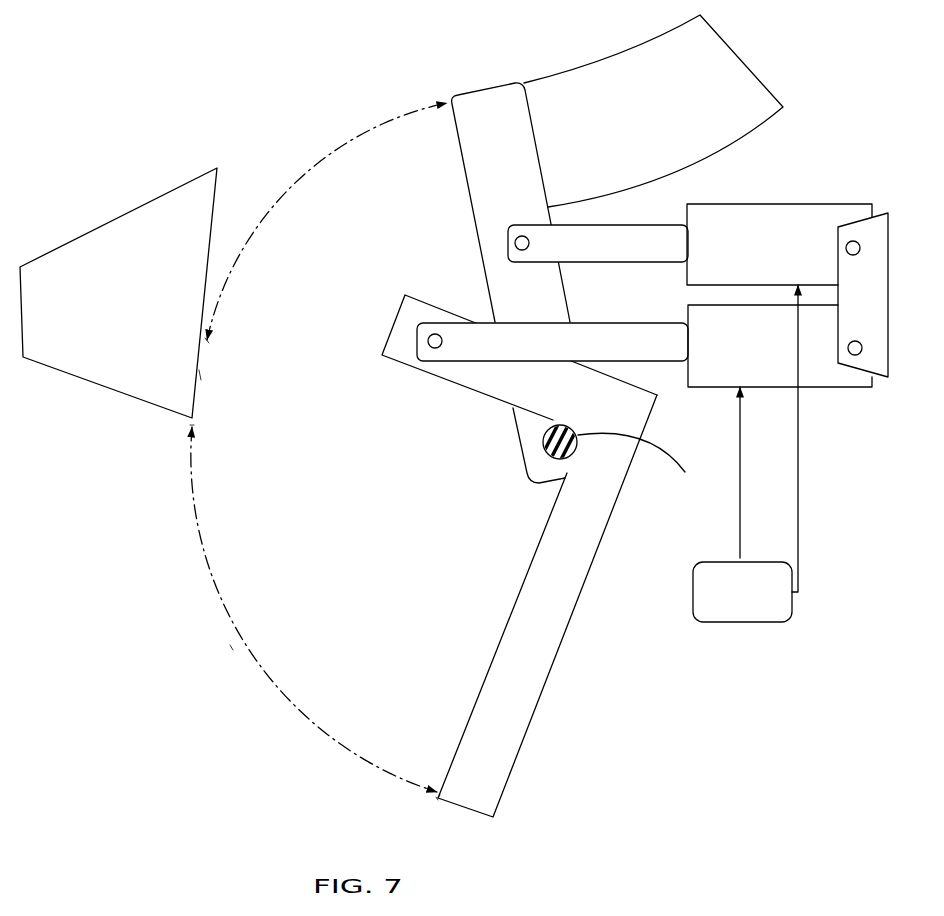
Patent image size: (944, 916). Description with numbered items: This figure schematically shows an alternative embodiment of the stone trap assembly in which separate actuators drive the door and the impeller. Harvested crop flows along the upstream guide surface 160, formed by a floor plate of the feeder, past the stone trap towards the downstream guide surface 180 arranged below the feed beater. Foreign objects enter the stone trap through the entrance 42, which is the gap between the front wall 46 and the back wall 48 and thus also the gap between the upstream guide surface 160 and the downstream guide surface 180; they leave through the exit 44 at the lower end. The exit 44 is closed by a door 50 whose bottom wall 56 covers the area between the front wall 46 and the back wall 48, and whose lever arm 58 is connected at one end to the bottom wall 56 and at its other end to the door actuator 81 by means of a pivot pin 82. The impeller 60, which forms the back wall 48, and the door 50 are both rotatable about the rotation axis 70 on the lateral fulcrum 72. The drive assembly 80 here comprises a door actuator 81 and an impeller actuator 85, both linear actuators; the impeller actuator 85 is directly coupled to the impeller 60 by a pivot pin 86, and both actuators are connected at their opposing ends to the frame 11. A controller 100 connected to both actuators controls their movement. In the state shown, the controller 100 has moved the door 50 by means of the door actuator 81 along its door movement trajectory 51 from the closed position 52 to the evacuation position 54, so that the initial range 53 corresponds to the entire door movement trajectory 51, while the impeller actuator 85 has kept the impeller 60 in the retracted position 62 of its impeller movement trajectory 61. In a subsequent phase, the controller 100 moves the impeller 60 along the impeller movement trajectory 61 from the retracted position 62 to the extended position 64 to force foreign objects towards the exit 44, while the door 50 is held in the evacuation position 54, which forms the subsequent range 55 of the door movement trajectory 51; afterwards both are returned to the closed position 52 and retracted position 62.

The frame 11 is at (877, 368).
The entrance 42 is at (327, 148).
The exit 44 is at (327, 417).
The front wall 46 is at (205, 375).
The back wall 48 is at (454, 157).
The door 50 is at (622, 648).
The door movement trajectory 51 is at (270, 692).
The closed position 52 is at (181, 428).
The initial range 53 is at (231, 648).
The evacuation position 54 is at (446, 796).
The subsequent range 55 is at (428, 802).
The bottom wall 56 is at (543, 675).
The lever arm 58 is at (440, 323).
The impeller 60 is at (490, 128).
The impeller movement trajectory 61 is at (238, 254).
The retracted position 62 is at (443, 115).
The extended position 64 is at (216, 348).
The rotation axis 70 is at (640, 467).
The lateral fulcrum 72 is at (544, 441).
The drive assembly 80 is at (815, 177).
The door actuator 81 is at (780, 370).
The pivot pin 82 is at (433, 323).
The impeller actuator 85 is at (740, 210).
The pivot pin 86 is at (516, 244).
The controller 100 is at (733, 608).
The upstream guide surface 160 is at (167, 187).
The downstream guide surface 180 is at (553, 68).